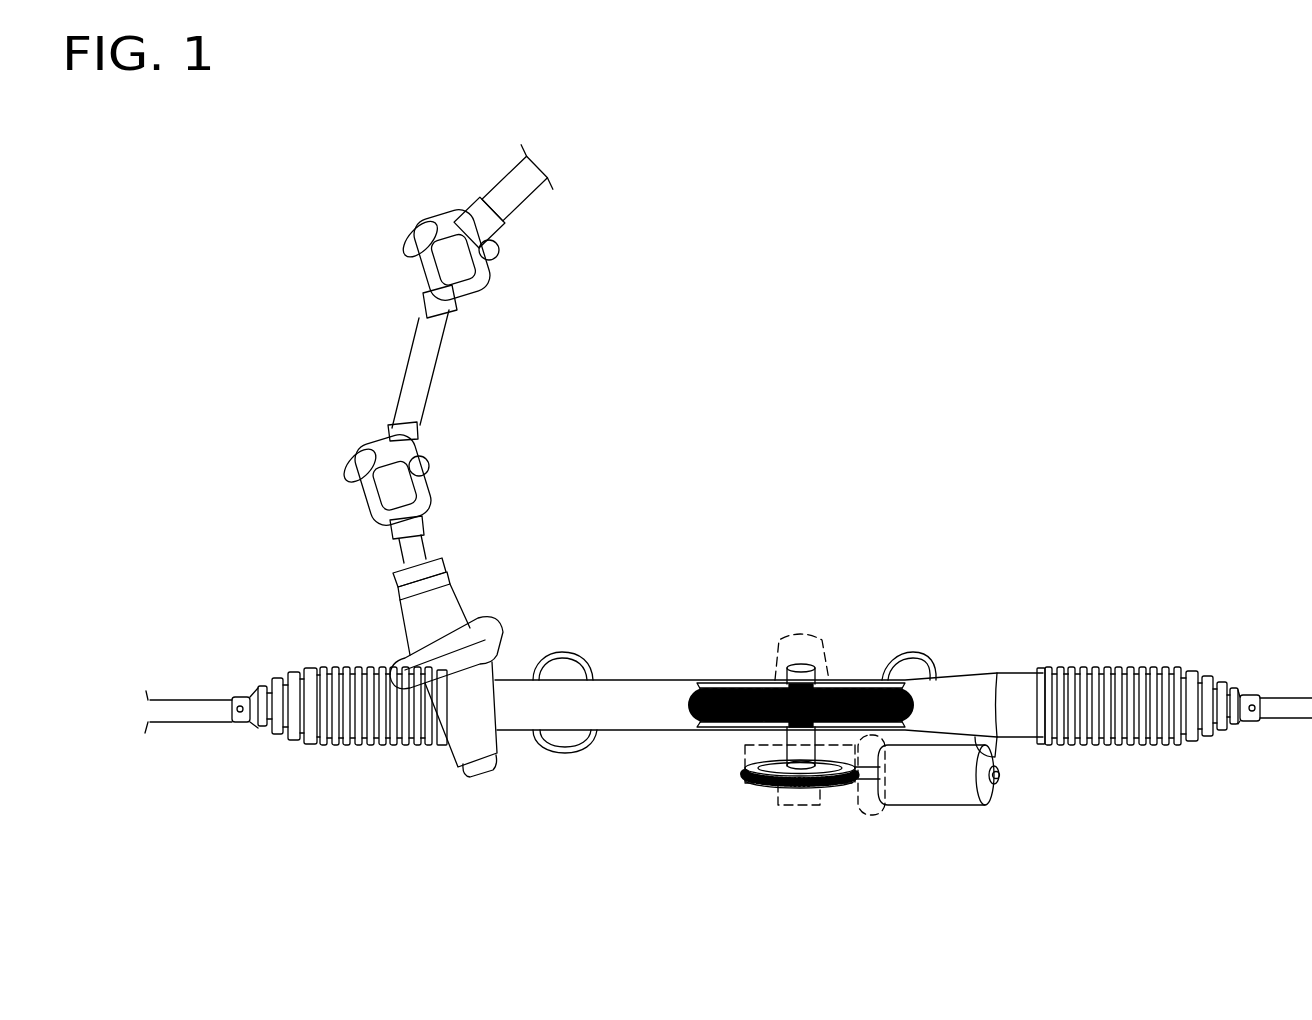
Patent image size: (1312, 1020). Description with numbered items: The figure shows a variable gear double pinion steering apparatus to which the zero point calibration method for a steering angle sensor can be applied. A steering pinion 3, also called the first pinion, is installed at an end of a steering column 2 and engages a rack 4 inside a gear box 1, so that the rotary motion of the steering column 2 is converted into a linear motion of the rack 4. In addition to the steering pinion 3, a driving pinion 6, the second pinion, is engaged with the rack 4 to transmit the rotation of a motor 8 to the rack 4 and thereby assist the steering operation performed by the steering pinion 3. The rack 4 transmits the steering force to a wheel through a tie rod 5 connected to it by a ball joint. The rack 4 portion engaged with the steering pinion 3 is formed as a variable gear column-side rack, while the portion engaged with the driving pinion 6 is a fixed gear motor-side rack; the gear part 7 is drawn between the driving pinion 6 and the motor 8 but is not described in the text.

The gear box 1 is at (652, 678).
The steering column 2 is at (448, 378).
The steering pinion (first pinion) 3 is at (517, 770).
The rack 4 is at (756, 682).
The tie rod 5 is at (206, 681).
The driving pinion (second pinion) 6 is at (848, 636).
The worm wheel 7 is at (753, 789).
The motor 8 is at (1028, 791).